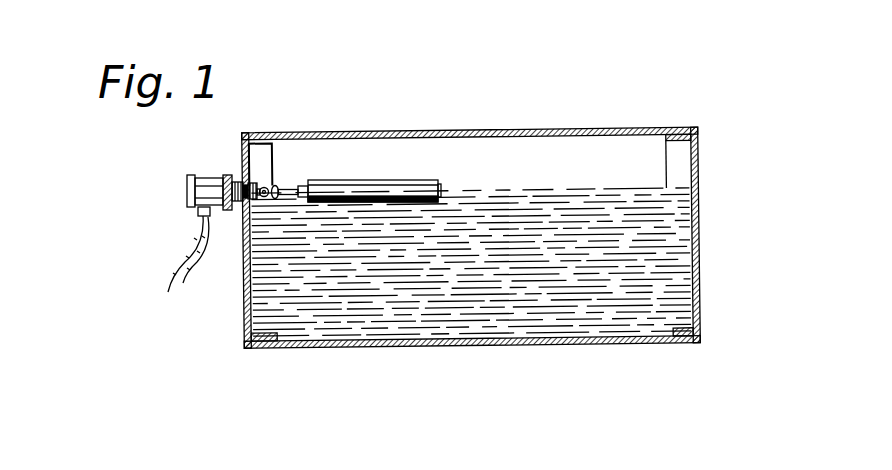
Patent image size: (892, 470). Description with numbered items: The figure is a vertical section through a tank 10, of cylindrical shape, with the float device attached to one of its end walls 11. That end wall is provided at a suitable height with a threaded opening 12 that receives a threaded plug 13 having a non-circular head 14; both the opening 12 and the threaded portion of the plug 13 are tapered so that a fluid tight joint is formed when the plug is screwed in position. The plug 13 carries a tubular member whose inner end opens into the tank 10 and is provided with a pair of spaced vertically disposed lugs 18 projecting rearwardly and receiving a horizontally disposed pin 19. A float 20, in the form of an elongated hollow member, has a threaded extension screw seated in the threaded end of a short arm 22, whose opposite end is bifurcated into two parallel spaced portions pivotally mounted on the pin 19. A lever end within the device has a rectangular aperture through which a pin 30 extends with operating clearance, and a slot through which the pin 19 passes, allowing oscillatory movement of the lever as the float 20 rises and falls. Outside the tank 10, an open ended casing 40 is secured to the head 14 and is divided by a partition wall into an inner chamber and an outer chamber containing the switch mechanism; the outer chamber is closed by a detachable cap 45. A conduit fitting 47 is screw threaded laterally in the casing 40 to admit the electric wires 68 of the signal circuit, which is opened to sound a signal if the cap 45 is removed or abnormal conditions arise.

The tank 10 is at (474, 209).
The end walls 11 is at (700, 166).
The threaded opening 12 is at (243, 177).
The threaded plug 13 is at (238, 205).
The non-circular head 14 is at (226, 176).
The lugs 18 is at (258, 203).
The pin 19 is at (264, 187).
The float 20 is at (422, 182).
The short arm 22 is at (293, 188).
The pin 30 is at (277, 187).
The casing 40 is at (185, 183).
The cap 45 is at (187, 193).
The conduit fitting 47 is at (198, 214).
The electric wires 68 is at (177, 287).